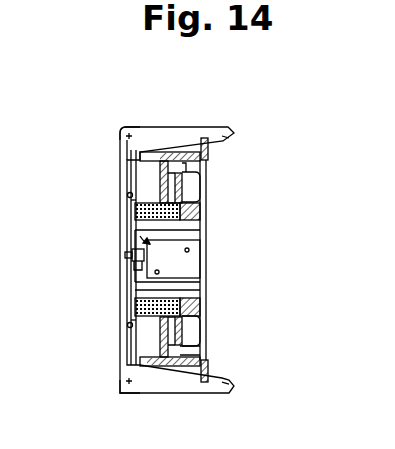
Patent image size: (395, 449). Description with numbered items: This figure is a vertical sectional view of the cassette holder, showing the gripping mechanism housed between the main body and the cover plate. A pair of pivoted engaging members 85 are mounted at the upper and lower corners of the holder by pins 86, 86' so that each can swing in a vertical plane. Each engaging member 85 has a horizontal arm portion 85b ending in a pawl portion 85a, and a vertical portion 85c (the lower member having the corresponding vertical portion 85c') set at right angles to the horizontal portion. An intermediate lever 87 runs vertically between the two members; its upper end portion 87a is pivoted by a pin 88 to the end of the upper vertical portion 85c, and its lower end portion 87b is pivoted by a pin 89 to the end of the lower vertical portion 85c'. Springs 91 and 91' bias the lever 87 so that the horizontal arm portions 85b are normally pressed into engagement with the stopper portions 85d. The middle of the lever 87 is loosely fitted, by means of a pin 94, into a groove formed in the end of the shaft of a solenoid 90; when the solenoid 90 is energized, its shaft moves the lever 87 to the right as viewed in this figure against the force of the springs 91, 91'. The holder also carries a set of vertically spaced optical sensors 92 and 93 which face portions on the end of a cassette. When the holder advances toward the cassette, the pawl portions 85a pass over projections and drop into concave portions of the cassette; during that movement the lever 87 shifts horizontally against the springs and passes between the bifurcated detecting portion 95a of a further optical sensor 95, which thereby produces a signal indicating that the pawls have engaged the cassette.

The pivoted engaging member 85 is at (194, 126).
The pawl portion 85a is at (233, 130).
The horizontal arm portion 85b is at (152, 140).
The vertical portion 85c is at (90, 168).
The vertical portion 85c' is at (90, 342).
The stopper portion 85d is at (210, 149).
The pin 86 is at (106, 109).
The pin 86' is at (92, 378).
The intermediate lever 87 is at (131, 233).
The upper end portion 87a is at (128, 213).
The lower end portion 87b is at (128, 298).
The pin 88 is at (126, 194).
The pin 89 is at (126, 325).
The solenoid 90 is at (187, 263).
The spring 91 is at (214, 205).
The spring 91' is at (217, 315).
The optical sensor 92 is at (205, 186).
The optical sensor 93 is at (205, 342).
The pin 94 is at (126, 258).
The optical sensor 95 is at (210, 233).
The bifurcated detecting portion 95a is at (210, 289).